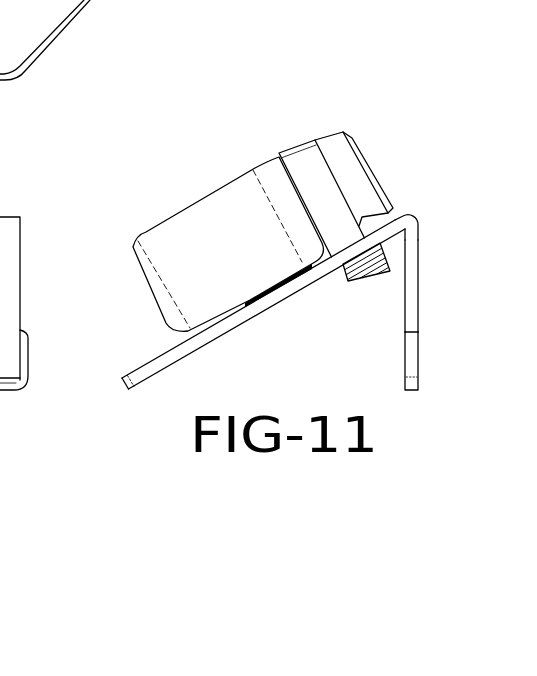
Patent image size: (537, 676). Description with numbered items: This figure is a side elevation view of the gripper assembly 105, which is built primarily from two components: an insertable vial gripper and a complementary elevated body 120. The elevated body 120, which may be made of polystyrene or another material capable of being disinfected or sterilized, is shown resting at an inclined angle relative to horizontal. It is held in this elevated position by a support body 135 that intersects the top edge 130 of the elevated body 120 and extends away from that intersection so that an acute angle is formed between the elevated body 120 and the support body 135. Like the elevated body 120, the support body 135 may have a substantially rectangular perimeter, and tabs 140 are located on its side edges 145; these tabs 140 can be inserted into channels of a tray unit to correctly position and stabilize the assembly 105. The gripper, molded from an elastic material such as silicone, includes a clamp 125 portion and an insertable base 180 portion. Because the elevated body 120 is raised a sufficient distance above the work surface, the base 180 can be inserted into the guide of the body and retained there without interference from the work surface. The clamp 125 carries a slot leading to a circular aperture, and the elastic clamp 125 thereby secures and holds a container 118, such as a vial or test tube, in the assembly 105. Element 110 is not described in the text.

The gripper assembly 105 is at (419, 140).
The bracket 110 is at (160, 353).
The container 118 is at (197, 218).
The elevated body 120 is at (238, 318).
The clamp 125 is at (313, 172).
The top edge 130 is at (410, 217).
The support body 135 is at (418, 278).
The tab 140 is at (410, 355).
The side edge 145 is at (410, 302).
The insertable base 180 is at (362, 288).